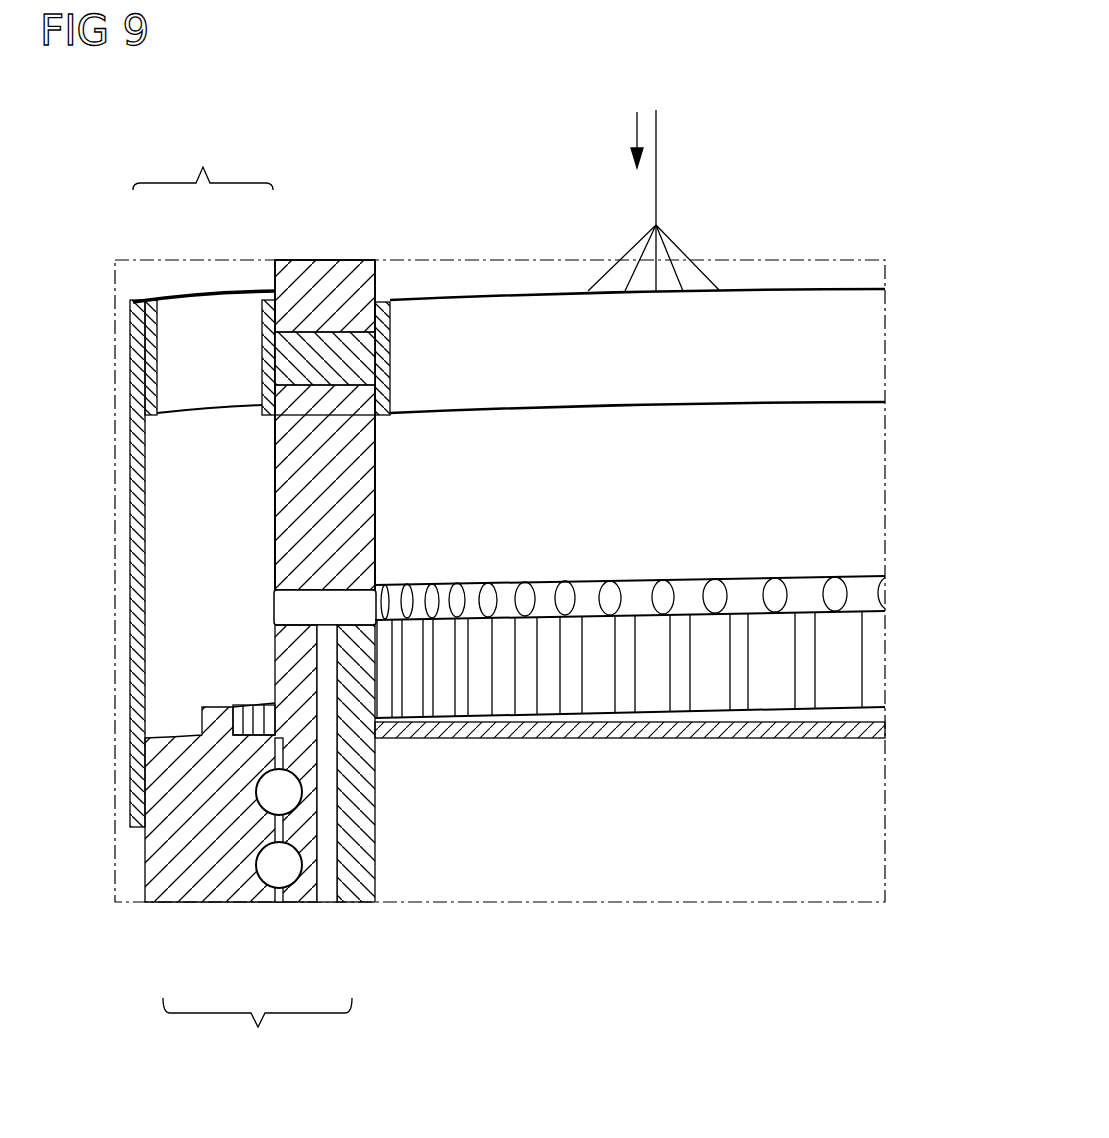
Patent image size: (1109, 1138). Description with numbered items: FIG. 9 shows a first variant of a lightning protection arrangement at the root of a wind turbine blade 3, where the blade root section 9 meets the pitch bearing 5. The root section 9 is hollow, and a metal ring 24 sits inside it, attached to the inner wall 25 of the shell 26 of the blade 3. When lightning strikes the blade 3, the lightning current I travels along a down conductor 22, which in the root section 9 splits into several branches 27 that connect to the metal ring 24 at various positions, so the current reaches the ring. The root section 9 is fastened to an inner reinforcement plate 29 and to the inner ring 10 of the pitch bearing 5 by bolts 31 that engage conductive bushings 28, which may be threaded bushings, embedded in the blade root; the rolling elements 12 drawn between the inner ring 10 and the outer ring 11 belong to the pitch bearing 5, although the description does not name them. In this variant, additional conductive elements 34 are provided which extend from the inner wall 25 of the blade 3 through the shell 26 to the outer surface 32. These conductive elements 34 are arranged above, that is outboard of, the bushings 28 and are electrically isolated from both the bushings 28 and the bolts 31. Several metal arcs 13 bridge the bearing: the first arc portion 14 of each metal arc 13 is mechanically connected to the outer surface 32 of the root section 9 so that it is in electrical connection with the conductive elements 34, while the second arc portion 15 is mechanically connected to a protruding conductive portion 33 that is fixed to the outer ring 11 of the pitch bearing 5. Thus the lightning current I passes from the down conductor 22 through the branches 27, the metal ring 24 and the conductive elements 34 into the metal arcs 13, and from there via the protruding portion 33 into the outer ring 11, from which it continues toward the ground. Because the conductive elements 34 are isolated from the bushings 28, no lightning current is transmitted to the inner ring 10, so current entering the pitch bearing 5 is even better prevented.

The blade 3 is at (330, 272).
The root section 9 is at (325, 425).
The shell 26 is at (325, 425).
The pitch bearing 5 is at (257, 1033).
The inner ring 10 is at (352, 900).
The outer ring 11 is at (175, 900).
The ball bearing 12 is at (272, 800).
The metal arc 13 is at (203, 159).
The first arc portion 14 is at (270, 298).
The second arc portion 15 is at (148, 296).
The down conductor 22 is at (656, 145).
The metal ring 24 is at (875, 358).
The inner wall 25 is at (630, 588).
The branches 27 is at (590, 283).
The conductive bushings 28 is at (290, 608).
The inner reinforcement plate 29 is at (835, 738).
The bolts 31 is at (412, 713).
The outer surface 32 is at (272, 487).
The protruding conductive portion 33 is at (135, 490).
The conductive elements 34 is at (357, 352).
The lightning current I is at (637, 135).